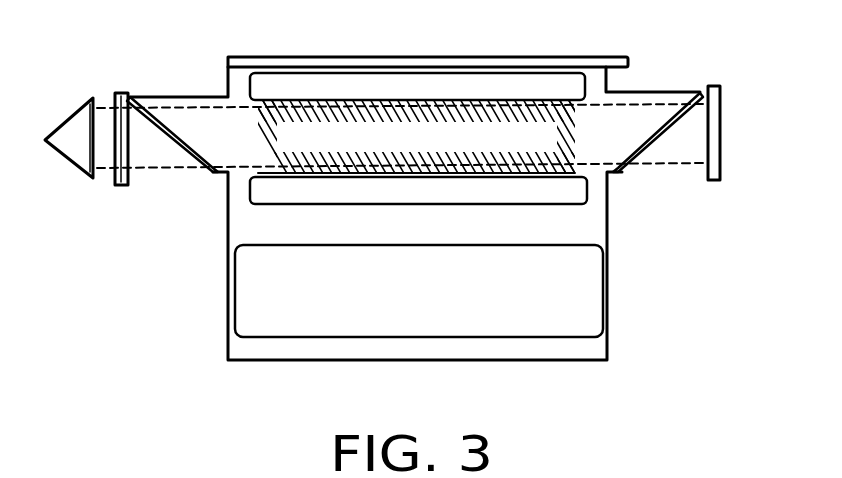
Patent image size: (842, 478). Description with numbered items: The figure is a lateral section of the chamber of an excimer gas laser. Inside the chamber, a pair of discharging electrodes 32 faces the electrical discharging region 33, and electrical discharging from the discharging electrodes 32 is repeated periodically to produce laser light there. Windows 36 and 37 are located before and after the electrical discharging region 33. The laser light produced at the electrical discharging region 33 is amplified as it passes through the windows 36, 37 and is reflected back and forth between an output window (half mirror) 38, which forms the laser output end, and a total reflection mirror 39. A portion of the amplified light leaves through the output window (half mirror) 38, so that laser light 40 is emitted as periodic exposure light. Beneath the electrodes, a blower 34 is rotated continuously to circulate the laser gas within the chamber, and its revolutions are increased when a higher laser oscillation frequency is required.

The discharging electrodes 32 is at (487, 187).
The electrical discharging region 33 is at (352, 132).
The blower 34 is at (420, 315).
The window 36 is at (176, 147).
The window 37 is at (660, 143).
The output window (half mirror) 38 is at (122, 96).
The total reflection mirror 39 is at (717, 83).
The laser light 40 is at (72, 118).